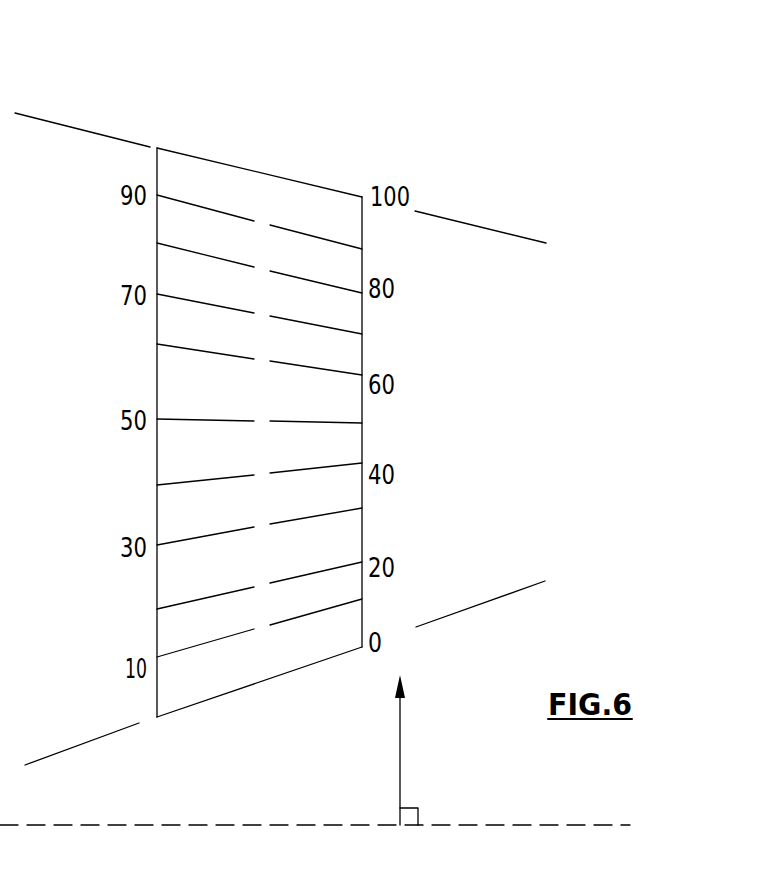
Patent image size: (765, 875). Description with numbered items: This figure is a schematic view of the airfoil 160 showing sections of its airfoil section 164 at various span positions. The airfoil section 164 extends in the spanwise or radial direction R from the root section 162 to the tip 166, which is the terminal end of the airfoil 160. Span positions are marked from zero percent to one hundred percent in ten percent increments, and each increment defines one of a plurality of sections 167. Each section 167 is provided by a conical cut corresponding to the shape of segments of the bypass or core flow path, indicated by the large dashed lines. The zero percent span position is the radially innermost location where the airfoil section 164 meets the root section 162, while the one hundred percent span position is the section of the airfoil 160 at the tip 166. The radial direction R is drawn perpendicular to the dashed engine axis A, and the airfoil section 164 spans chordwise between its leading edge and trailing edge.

The airfoil 160 is at (109, 73).
The root section 162 is at (282, 675).
The airfoil section 164 is at (389, 339).
The tip 166 is at (257, 172).
The sections 167 is at (170, 455).
The engine central longitudinal axis A is at (197, 826).
The radial direction R is at (400, 758).